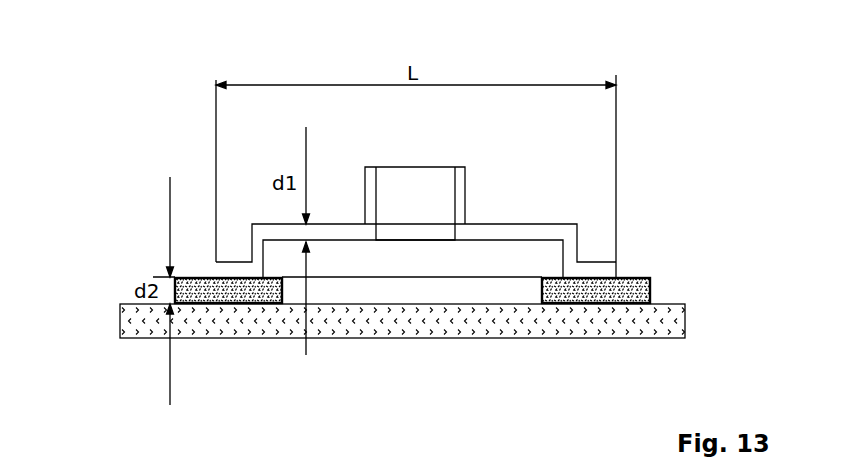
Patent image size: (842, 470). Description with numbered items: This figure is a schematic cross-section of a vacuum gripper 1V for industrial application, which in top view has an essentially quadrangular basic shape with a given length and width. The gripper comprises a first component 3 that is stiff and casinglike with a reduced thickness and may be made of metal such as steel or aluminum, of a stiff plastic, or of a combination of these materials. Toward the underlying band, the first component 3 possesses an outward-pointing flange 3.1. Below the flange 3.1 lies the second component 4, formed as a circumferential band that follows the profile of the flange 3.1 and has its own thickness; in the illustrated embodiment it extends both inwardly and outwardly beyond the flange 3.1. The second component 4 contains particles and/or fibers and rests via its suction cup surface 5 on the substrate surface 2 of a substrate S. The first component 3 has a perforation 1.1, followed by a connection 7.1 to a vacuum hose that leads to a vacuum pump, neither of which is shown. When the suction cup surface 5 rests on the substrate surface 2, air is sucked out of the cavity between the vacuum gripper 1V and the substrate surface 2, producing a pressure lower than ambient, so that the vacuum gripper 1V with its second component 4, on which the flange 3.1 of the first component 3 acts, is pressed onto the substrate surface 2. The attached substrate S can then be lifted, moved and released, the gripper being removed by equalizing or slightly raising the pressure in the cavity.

The vacuum gripper 1V is at (572, 125).
The perforation 1.1 is at (437, 232).
The connection 7.1 is at (472, 207).
The first component 3 is at (567, 233).
The flange 3.1 is at (598, 270).
The second component 4 is at (651, 293).
The substrate S is at (663, 322).
The substrate surface 2 is at (135, 278).
The suction cup surface 5 is at (225, 335).